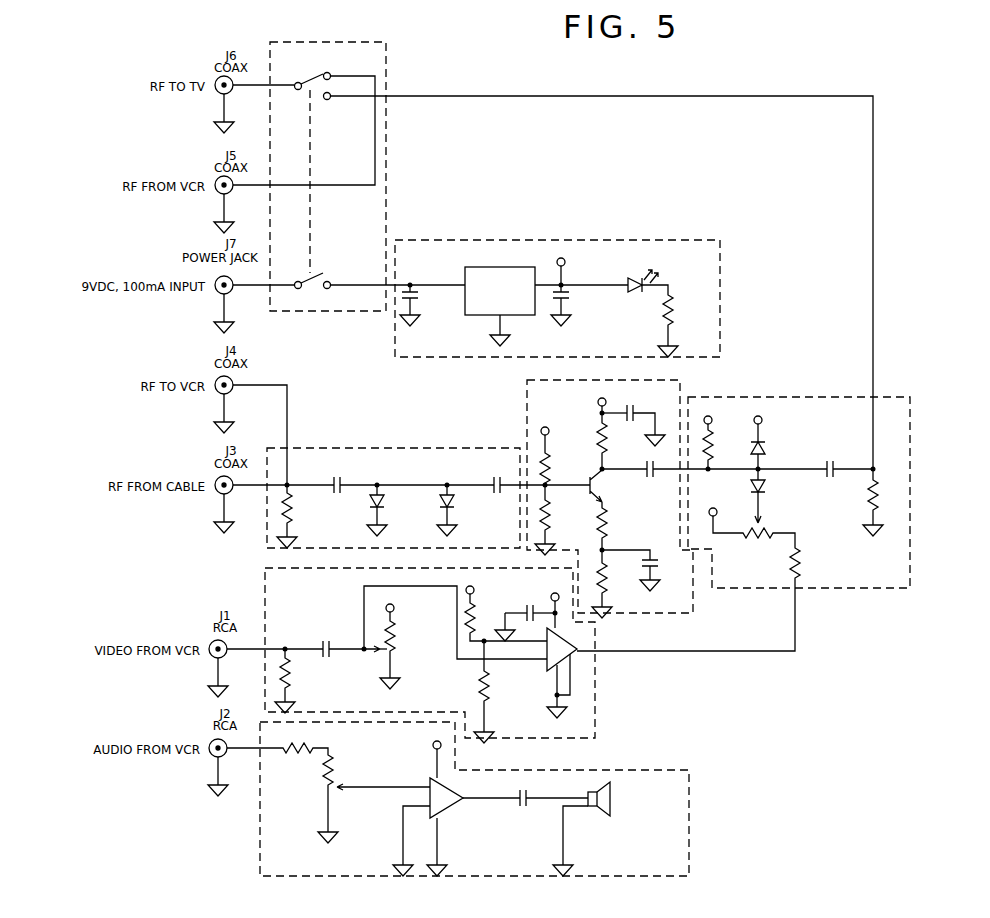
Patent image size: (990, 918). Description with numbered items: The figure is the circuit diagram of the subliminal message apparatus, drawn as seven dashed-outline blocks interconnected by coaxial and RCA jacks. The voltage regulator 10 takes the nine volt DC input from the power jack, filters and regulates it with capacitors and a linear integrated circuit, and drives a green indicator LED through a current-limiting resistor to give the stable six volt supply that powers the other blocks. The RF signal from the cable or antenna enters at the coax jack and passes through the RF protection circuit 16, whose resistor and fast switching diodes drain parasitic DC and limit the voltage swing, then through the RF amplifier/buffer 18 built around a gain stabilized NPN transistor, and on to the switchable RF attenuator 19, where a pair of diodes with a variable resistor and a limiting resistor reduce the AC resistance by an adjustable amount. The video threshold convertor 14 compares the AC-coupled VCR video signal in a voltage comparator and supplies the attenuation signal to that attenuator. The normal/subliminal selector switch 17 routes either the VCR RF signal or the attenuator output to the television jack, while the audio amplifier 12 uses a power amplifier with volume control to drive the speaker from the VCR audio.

The voltage regulator 10 is at (723, 280).
The audio amplifier 12 is at (690, 800).
The video threshold convertor 14 is at (597, 680).
The RF protection circuit 16 is at (312, 447).
The normal/subliminal selector switch 17 is at (387, 155).
The RF amplifier/buffer 18 is at (525, 405).
The switchable RF attenuator 19 is at (912, 437).